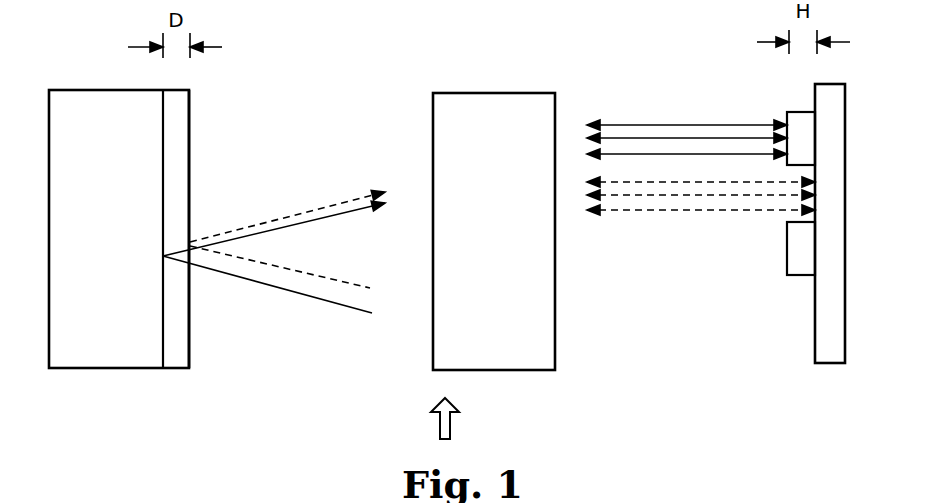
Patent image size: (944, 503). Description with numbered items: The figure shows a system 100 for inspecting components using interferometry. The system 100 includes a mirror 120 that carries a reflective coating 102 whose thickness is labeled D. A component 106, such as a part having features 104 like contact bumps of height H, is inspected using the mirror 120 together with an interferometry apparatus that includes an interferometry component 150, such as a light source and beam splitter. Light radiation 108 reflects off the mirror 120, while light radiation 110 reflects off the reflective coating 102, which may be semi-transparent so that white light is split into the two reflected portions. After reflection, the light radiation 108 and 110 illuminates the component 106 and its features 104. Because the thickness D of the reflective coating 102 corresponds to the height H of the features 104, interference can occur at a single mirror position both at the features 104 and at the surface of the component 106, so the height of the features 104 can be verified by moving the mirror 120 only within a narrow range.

The system 100 is at (423, 418).
The reflective coating 102 is at (199, 229).
The features 104 is at (791, 194).
The component 106 is at (831, 238).
The light radiation 108 is at (475, 212).
The light radiation 110 is at (502, 239).
The mirror 120 is at (88, 242).
The interferometry component 150 is at (476, 242).